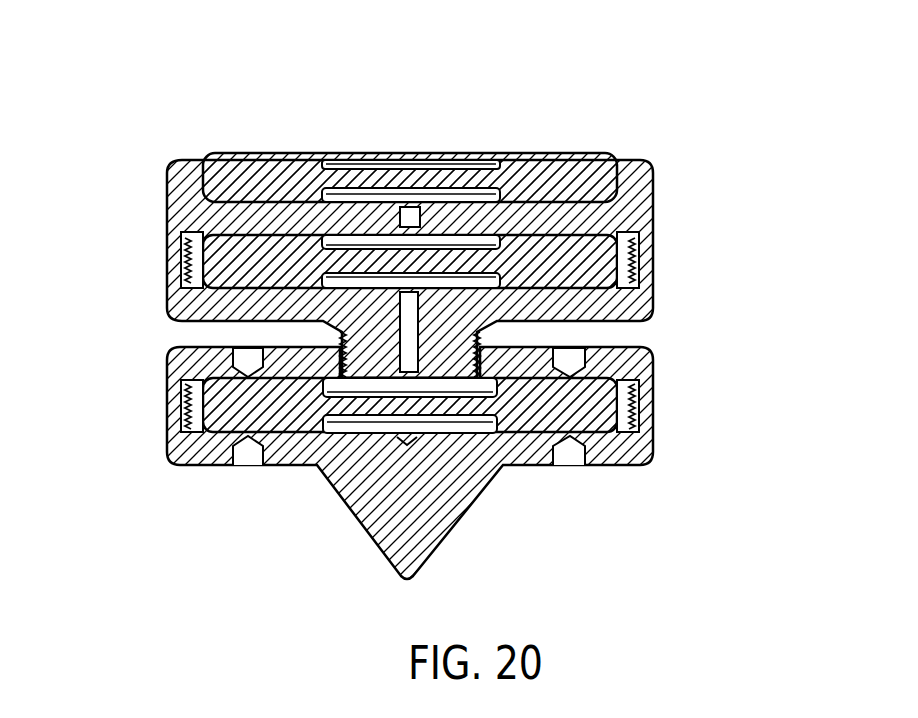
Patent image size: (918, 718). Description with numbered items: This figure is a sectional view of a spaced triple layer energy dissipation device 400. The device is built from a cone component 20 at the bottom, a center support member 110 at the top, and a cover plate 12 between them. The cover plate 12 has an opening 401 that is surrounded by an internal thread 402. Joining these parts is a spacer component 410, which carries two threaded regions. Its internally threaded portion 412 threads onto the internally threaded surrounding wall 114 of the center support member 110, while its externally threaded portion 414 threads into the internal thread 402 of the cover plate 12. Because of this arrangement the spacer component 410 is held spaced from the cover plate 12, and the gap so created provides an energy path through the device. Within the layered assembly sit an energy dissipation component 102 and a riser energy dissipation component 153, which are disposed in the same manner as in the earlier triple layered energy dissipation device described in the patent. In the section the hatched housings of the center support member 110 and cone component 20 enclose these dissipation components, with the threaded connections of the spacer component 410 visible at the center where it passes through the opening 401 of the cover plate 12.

The spaced triple layer energy dissipation device 400 is at (507, 153).
The energy dissipation component 102 is at (650, 414).
The center support member 110 is at (652, 160).
The riser energy dissipation component 153 is at (650, 238).
The spacer component 410 is at (655, 295).
The opening 401 is at (480, 338).
The cover plate 12 is at (660, 358).
The cone component 20 is at (648, 463).
The internally threaded portion 412 is at (186, 244).
The internally threaded surrounding wall 114 is at (186, 271).
The externally threaded portion 414 is at (340, 331).
The internal thread 402 is at (342, 347).